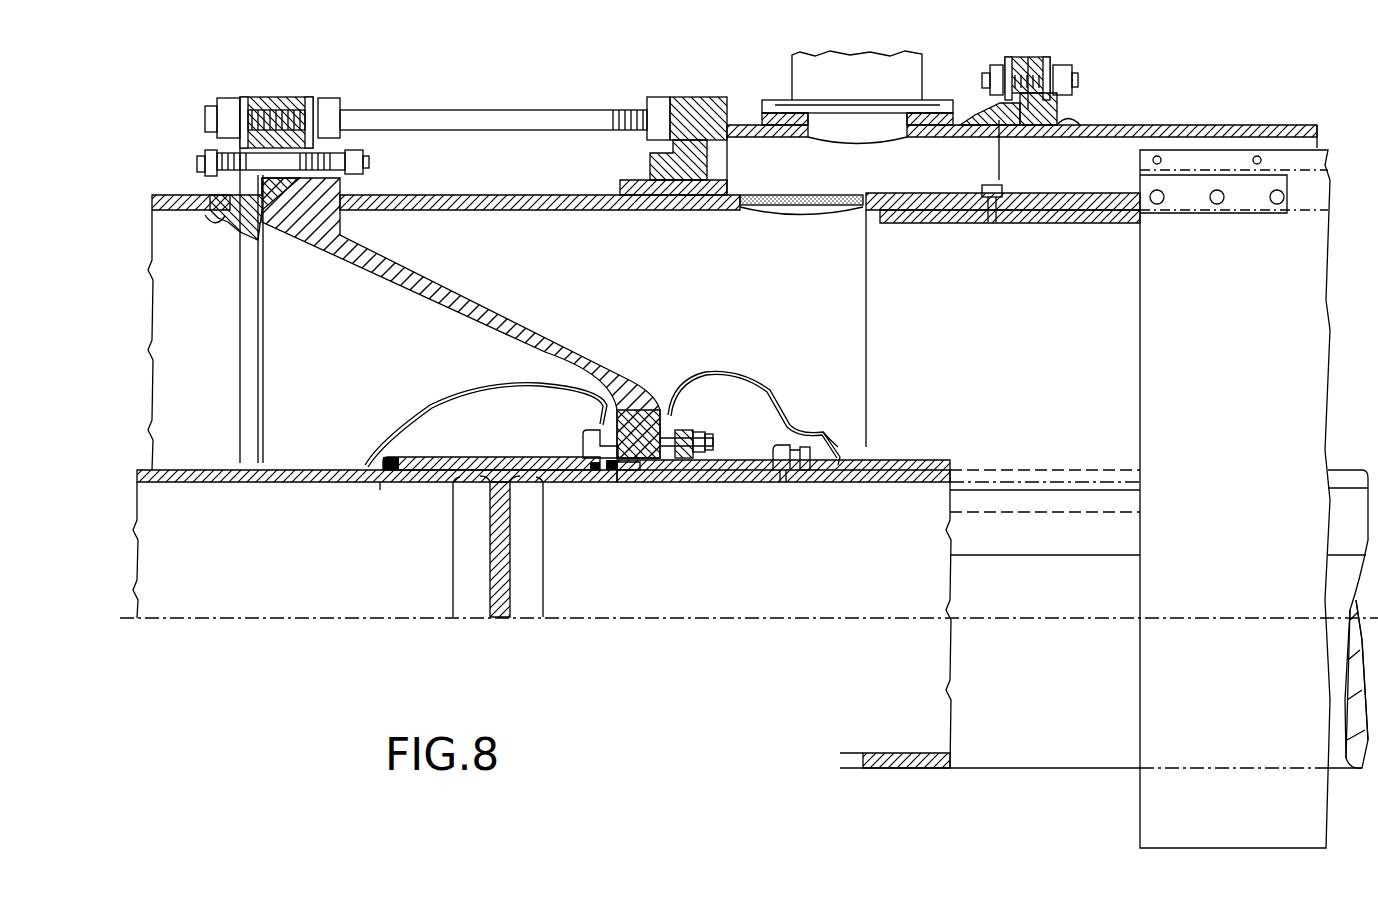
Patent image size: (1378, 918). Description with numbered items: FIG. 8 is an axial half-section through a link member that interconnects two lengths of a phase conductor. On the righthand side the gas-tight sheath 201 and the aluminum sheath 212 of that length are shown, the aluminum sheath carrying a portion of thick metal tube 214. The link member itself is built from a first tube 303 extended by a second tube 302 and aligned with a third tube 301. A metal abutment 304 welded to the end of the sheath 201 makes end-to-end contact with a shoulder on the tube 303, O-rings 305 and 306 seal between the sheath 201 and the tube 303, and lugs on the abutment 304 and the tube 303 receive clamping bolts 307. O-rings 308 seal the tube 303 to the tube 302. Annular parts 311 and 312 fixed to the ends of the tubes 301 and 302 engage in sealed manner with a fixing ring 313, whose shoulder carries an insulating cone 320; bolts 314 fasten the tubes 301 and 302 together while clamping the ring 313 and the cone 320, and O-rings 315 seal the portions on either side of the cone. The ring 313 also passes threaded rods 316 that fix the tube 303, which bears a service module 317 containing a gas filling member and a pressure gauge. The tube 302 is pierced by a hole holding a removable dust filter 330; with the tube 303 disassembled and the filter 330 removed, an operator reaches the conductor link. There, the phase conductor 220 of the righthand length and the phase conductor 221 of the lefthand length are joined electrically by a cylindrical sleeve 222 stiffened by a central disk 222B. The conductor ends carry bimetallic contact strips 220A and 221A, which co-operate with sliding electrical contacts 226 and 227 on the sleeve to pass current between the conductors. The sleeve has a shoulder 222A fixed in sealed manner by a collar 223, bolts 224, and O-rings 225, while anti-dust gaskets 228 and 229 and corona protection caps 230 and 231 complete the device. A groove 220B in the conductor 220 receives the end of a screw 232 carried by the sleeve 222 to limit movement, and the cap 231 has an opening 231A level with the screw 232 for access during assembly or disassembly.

The gas-tight sheath 201 is at (1200, 126).
The aluminum sheath 212 is at (1230, 180).
The thick metal tube 214 is at (925, 215).
The phase conductor 220 is at (905, 484).
The contact strip 220A is at (645, 484).
The groove 220B is at (810, 484).
The phase conductor 221 is at (280, 470).
The contact strip 221A is at (380, 490).
The cylindrical sleeve 222 is at (460, 490).
The shoulder 222A is at (660, 375).
The central disk 222B is at (510, 573).
The collar 223 is at (684, 430).
The bolts 224 is at (712, 442).
The O-rings 225 is at (615, 484).
The sliding electrical contact 226 is at (595, 484).
The sliding electrical contact 227 is at (395, 456).
The anti-dust gasket 228 is at (425, 457).
The anti-dust gasket 229 is at (580, 457).
The corona protection cap 230 is at (522, 386).
The corona protection cap 231 is at (745, 372).
The opening 231A is at (800, 428).
The screw 232 is at (780, 484).
The third tube 301 is at (172, 196).
The second tube 302 is at (530, 210).
The first tube 303 is at (685, 100).
The metal abutment 304 is at (1062, 108).
The O-ring 305 is at (1000, 138).
The O-ring 306 is at (990, 135).
The clamping bolts 307 is at (1040, 62).
The O-rings 308 is at (690, 197).
The annular part 311 is at (228, 222).
The annular part 312 is at (338, 198).
The fixing ring 313 is at (272, 100).
The bolts 314 is at (310, 118).
The O-rings 315 is at (258, 235).
The threaded rods 316 is at (488, 112).
The service module 317 is at (812, 72).
The insulating cone 320 is at (430, 270).
The removable dust filter 330 is at (790, 195).